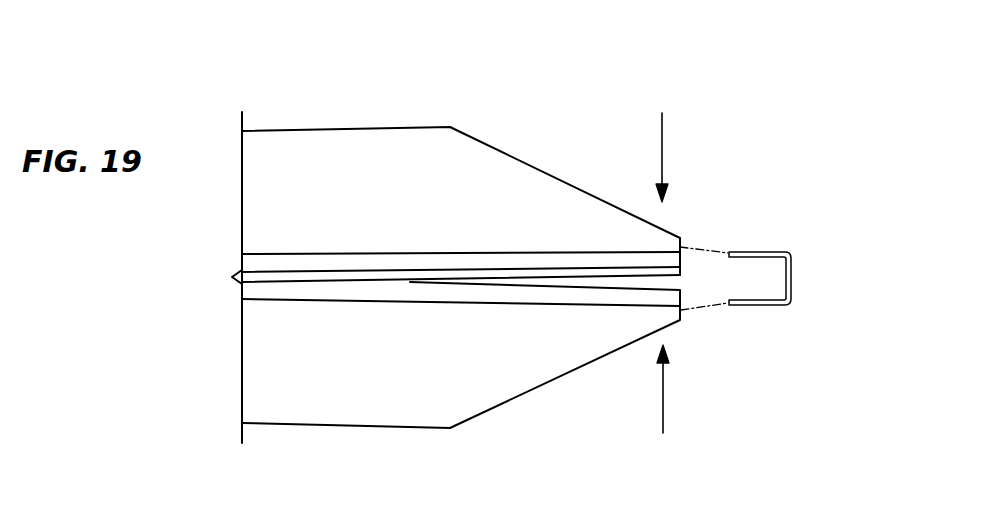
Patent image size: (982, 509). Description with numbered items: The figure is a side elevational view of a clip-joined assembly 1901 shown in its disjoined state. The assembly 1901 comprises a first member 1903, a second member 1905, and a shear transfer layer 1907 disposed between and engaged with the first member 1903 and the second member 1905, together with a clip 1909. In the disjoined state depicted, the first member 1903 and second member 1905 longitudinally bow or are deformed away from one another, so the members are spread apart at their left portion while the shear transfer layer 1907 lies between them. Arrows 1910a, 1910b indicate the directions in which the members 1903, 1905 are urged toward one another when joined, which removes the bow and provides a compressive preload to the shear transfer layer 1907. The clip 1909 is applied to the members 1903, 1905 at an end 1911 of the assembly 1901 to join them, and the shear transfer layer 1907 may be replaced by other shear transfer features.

The assembly 1901 is at (591, 108).
The first member 1903 is at (313, 142).
The second member 1905 is at (315, 405).
The shear transfer layer 1907 is at (508, 274).
The clip 1909 is at (738, 250).
The arrow 1910a is at (663, 133).
The arrow 1910b is at (664, 410).
The end 1911 is at (683, 293).